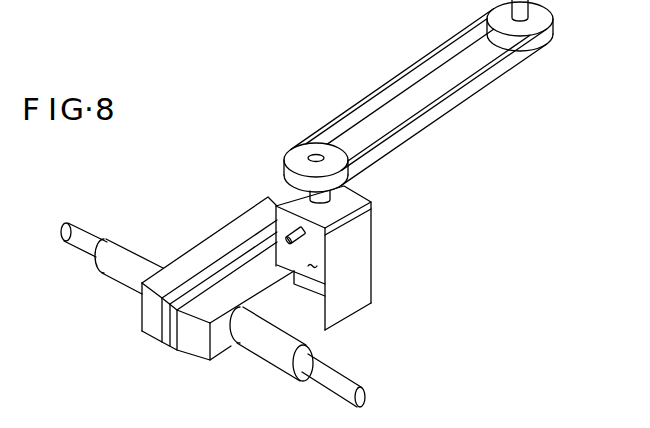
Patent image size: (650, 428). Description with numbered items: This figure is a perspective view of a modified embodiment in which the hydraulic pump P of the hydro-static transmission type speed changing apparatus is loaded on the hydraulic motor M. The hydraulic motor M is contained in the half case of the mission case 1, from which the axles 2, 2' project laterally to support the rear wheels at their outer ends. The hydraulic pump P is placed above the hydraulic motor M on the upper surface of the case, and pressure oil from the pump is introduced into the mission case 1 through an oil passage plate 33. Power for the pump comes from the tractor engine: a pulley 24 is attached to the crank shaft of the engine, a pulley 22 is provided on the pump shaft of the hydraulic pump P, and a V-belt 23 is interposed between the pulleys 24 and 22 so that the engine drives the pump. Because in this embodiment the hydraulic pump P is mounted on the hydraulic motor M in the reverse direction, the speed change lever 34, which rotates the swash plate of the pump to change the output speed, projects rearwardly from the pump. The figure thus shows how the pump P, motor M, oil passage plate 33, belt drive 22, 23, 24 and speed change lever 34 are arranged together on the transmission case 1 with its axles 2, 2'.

The mission case 1 is at (208, 243).
The axle 2 is at (297, 367).
The shaft 2' is at (193, 147).
The pulley 22 is at (337, 167).
The V-belt 23 is at (455, 102).
The pulley 24 is at (542, 15).
The oil passage plate 33 is at (375, 256).
The speed change lever 34 is at (291, 228).
The hydraulic motor M is at (314, 318).
The hydraulic pump P is at (310, 251).